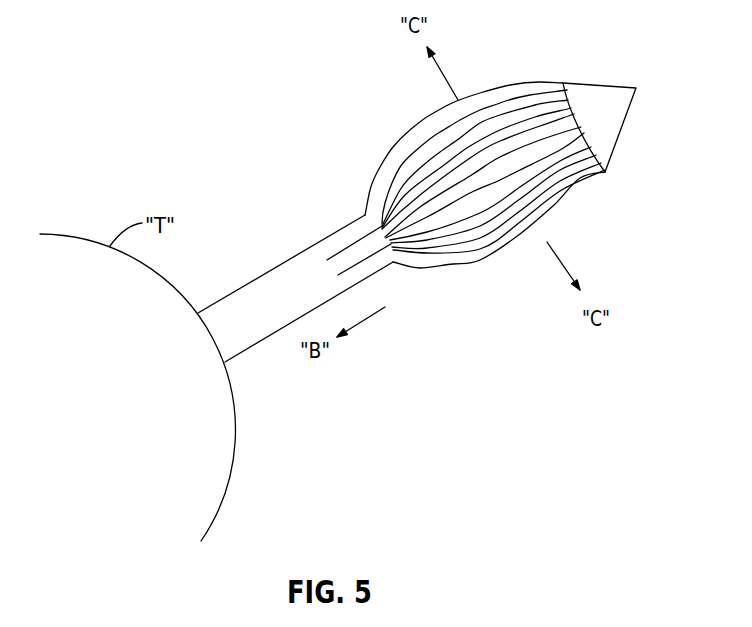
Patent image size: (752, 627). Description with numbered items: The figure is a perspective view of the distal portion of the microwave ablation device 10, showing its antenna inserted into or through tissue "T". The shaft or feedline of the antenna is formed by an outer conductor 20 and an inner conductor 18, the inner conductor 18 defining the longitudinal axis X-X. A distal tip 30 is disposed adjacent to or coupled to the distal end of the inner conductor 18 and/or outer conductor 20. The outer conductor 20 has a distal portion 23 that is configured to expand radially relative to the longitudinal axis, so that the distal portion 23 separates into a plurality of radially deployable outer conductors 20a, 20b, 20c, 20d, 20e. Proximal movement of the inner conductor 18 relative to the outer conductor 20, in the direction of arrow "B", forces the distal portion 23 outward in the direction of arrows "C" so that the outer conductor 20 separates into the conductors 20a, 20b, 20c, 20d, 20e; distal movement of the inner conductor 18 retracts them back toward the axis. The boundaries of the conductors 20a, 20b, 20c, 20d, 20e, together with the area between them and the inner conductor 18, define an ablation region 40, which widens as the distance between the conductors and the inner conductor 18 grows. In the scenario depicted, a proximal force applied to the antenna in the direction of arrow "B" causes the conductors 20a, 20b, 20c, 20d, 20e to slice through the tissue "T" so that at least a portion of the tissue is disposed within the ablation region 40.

The microwave ablation device 10 is at (260, 113).
The inner conductor 18 is at (445, 188).
The outer conductor 20 is at (268, 271).
The radially deployable outer conductor 20a is at (555, 217).
The radially deployable outer conductor 20b is at (568, 172).
The radially deployable outer conductor 20c is at (553, 122).
The radially deployable outer conductor 20d is at (440, 157).
The radially deployable outer conductor 20e is at (447, 123).
The distal portion 23 is at (292, 220).
The distal tip 30 is at (612, 112).
The ablation region 40 is at (508, 190).